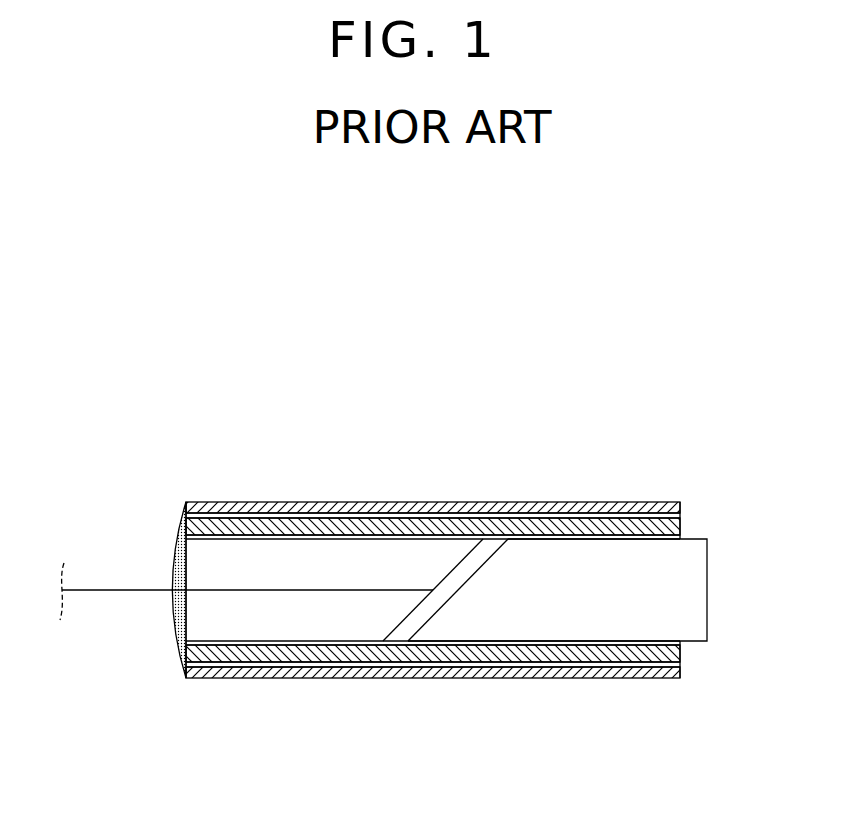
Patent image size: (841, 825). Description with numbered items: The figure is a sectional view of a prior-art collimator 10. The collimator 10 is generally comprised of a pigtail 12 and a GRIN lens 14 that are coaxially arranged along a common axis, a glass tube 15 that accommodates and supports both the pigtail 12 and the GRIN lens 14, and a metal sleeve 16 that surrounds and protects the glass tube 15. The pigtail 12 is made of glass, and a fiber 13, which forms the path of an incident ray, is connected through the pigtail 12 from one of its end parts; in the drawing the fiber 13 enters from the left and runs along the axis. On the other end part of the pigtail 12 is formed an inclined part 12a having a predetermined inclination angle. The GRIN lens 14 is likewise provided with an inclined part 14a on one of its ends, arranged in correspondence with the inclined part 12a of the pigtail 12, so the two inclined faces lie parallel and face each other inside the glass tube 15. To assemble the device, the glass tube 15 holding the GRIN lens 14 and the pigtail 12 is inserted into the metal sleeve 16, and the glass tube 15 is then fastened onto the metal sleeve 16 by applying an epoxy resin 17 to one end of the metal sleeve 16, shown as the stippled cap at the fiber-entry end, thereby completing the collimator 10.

The collimator 10 is at (652, 416).
The pigtail 12 is at (243, 615).
The inclined part 12a is at (393, 613).
The fiber 13 is at (113, 590).
The GRIN lens 14 is at (550, 613).
The inclined part 14a is at (393, 613).
The glass tube 15 is at (328, 524).
The metal sleeve 16 is at (518, 508).
The epoxy resin 17 is at (173, 557).